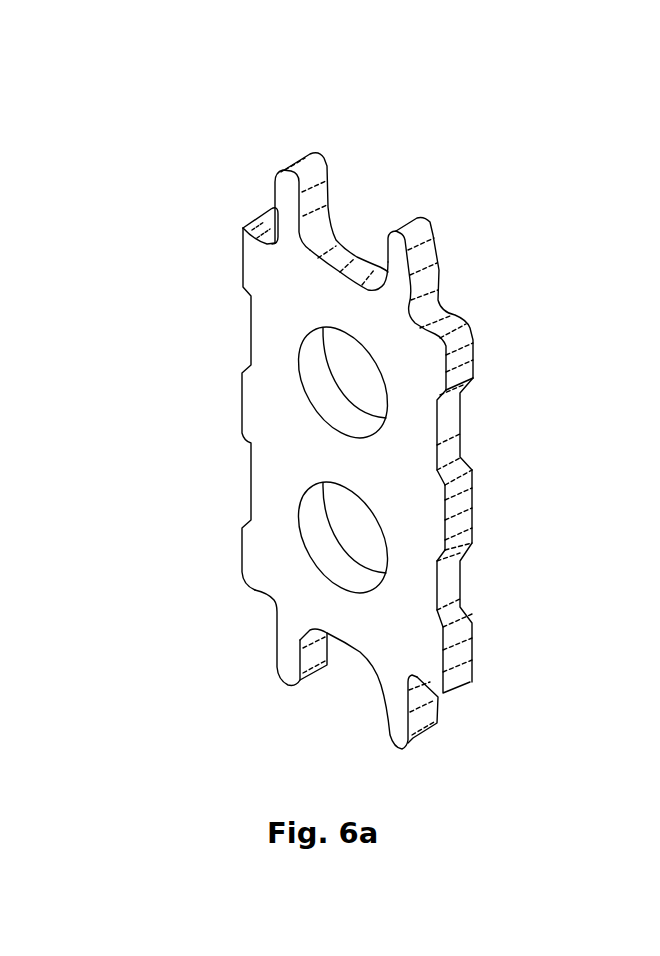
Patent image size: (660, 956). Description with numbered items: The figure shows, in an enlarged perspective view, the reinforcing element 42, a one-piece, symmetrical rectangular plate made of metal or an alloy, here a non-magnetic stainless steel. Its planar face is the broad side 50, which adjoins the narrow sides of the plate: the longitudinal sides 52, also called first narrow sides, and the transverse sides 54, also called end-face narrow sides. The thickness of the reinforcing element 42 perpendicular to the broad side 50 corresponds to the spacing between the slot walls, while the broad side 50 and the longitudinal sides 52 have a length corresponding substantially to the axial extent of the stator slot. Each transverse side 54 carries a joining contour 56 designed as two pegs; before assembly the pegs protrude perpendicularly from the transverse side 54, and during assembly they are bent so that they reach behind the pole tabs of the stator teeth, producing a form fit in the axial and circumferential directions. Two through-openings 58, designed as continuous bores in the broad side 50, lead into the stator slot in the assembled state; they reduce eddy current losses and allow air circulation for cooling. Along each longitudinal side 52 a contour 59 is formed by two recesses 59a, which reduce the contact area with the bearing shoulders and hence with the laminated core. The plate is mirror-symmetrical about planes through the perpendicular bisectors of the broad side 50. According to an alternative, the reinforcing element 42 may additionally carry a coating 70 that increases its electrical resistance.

The reinforcing element 42 is at (198, 114).
The broad side 50 is at (297, 453).
The longitudinal side 52 is at (453, 512).
The transverse side 54 is at (355, 276).
The joining contour 56 is at (311, 158).
The through-opening 58 is at (355, 367).
The contour 59 is at (499, 617).
The recess 59a is at (451, 410).
The coating 70 is at (273, 546).